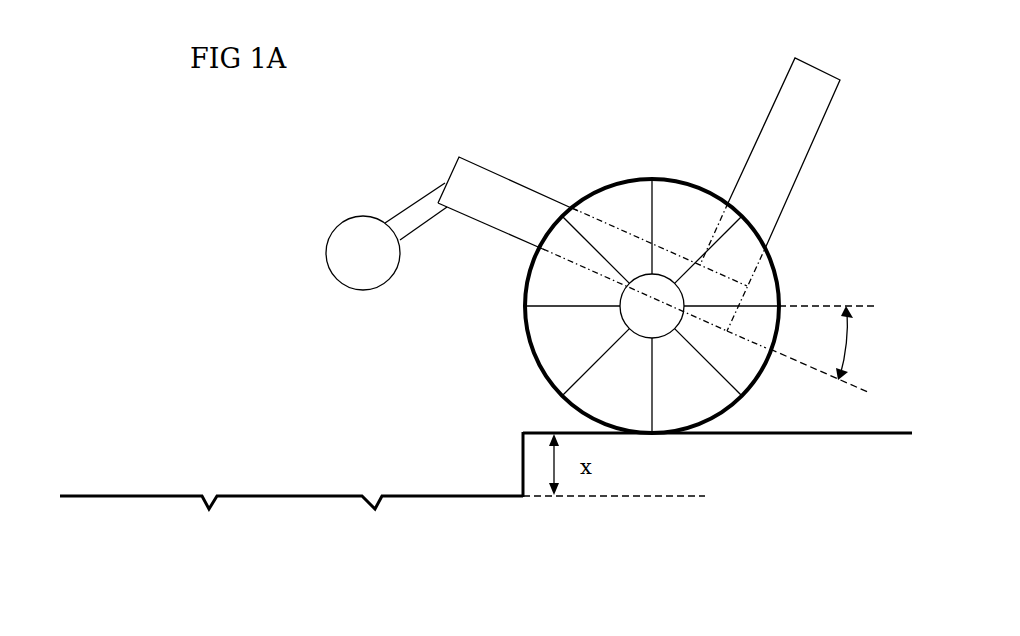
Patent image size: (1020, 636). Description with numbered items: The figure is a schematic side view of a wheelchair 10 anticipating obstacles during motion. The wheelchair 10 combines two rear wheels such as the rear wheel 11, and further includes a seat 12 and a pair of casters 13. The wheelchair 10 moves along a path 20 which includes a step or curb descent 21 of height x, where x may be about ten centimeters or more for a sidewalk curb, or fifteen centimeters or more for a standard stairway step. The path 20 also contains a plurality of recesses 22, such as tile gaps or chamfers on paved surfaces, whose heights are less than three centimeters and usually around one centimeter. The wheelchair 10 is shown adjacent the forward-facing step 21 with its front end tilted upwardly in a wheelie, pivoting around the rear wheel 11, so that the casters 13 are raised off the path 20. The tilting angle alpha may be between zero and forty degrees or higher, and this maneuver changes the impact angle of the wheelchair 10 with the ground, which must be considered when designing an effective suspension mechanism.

The wheelchair 10 is at (606, 82).
The rear wheel 11 is at (532, 353).
The seat 12 is at (540, 192).
The casters 13 is at (335, 225).
The path 20 is at (795, 434).
The step or curb descent 21 is at (525, 475).
The recesses 22 is at (370, 509).